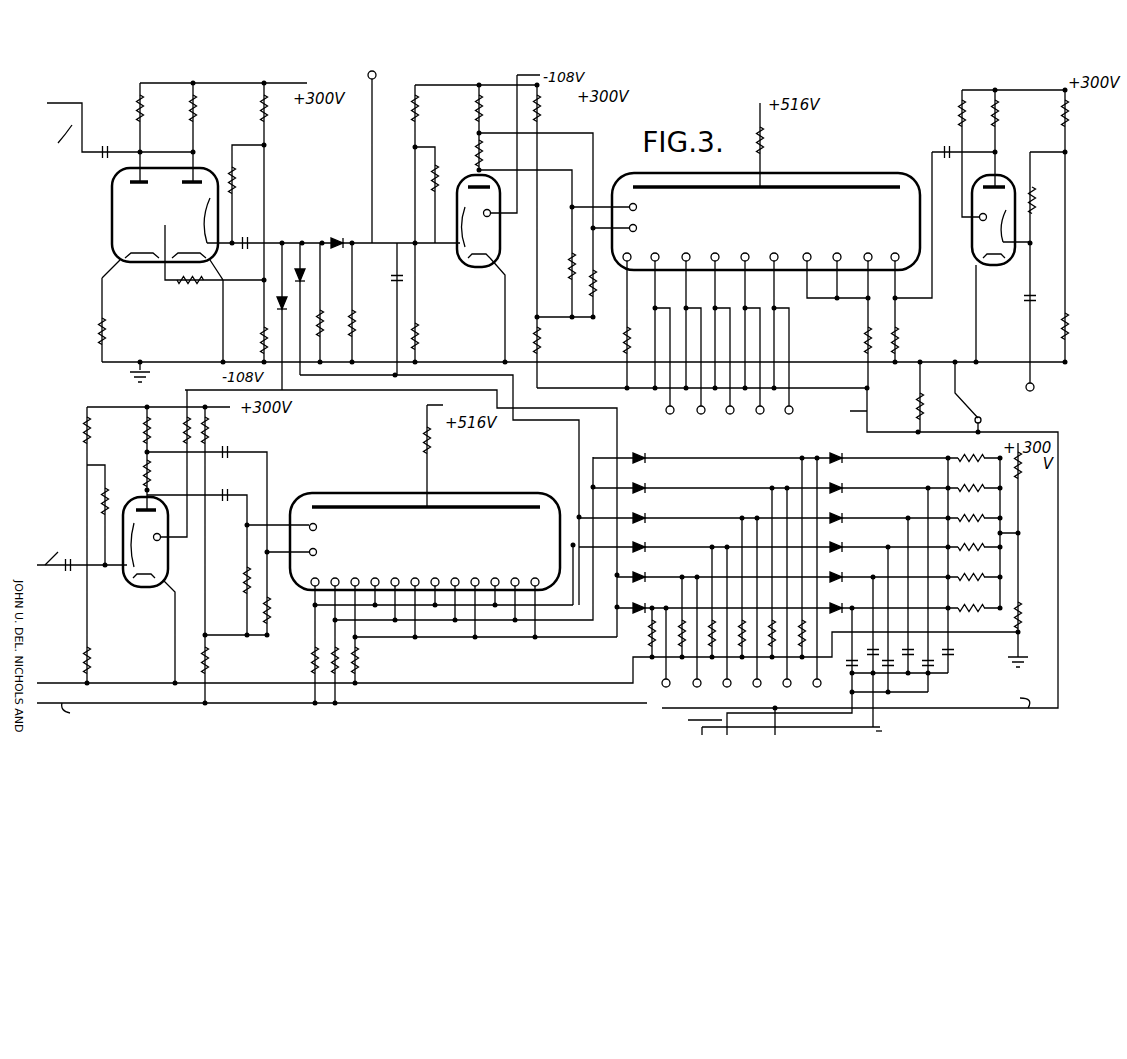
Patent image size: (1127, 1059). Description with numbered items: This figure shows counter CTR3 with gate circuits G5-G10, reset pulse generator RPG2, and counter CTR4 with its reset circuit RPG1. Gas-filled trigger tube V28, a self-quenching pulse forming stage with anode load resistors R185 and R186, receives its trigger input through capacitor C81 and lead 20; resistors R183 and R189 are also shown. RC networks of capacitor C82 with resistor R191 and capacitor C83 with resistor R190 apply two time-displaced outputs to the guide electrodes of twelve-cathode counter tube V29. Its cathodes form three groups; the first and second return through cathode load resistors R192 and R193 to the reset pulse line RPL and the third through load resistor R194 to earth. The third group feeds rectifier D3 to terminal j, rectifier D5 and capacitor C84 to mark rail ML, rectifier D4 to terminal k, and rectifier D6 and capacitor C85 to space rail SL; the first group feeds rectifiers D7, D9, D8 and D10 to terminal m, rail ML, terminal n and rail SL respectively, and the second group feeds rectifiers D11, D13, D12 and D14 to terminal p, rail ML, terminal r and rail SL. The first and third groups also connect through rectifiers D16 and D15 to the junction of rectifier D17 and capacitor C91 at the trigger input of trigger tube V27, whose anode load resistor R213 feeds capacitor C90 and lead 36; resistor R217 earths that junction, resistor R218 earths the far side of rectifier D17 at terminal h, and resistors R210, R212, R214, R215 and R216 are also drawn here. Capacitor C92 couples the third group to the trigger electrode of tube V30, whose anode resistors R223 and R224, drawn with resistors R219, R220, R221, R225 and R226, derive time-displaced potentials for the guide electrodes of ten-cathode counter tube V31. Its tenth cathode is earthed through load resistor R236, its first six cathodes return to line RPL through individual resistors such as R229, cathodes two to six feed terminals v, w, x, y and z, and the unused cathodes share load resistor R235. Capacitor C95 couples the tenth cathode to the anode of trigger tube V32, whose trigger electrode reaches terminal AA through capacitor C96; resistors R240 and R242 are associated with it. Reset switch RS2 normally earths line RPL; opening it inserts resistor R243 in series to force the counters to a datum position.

The lead 36 is at (57, 148).
The capacitor C90 is at (104, 131).
The reset pulse generator RPG2 is at (116, 100).
The load resistor R213 is at (206, 106).
The resistor R214 is at (217, 162).
The resistor R215 is at (279, 116).
The connector panel terminal h is at (380, 84).
The gas-filled trigger tube V27 is at (165, 215).
The capacitor C91 is at (243, 222).
The rectifier D15 is at (273, 252).
The rectifier D16 is at (297, 238).
The rectifier D17 is at (345, 223).
The resistor R212 is at (191, 294).
The resistor R210 is at (122, 327).
The resistor R216 is at (247, 328).
The resistor R217 is at (335, 312).
The resistor R218 is at (369, 327).
The capacitor C92 is at (385, 274).
The resistor R219 is at (433, 108).
The resistor R221 is at (451, 165).
The resistor R220 is at (439, 336).
The series resistor R224 is at (494, 108).
The series resistor R223 is at (494, 151).
The resistor R225 is at (554, 108).
The resistor R226 is at (553, 335).
The cathode load resistor R229 is at (611, 334).
The gas-filled discharge tube V30 is at (476, 235).
The ten-cathode counter tube V31 is at (766, 221).
The counter CTR4 is at (847, 150).
The common load resistor R235 is at (847, 334).
The load resistor R236 is at (913, 334).
The reset circuit RPG1 is at (1007, 100).
The capacitor C95 is at (933, 139).
The resistor R240 is at (1088, 113).
The resistor R242 is at (1087, 326).
The gas-filled trigger tube V32 is at (993, 241).
The capacitor C96 is at (1020, 319).
The resistor R243 is at (902, 399).
The reset switch RS2 is at (982, 401).
The connector panel terminal AA is at (1027, 401).
The reset pulse line RPL is at (546, 562).
The connection panel terminal v is at (671, 423).
The connection panel terminal w is at (701, 423).
The connection panel terminal x is at (730, 423).
The connection panel terminal y is at (760, 424).
The connection panel terminal z is at (789, 423).
The gate circuits G5-G10 is at (712, 450).
The lead 20 is at (55, 549).
The capacitor C81 is at (60, 587).
The resistor R183 is at (110, 660).
The anode load resistor R185 is at (163, 428).
The anode load resistor R186 is at (163, 472).
The capacitor C82 is at (233, 441).
The capacitor C83 is at (232, 484).
The gas-filled trigger tube V28 is at (158, 542).
The resistor R189 is at (227, 660).
The resistor R190 is at (232, 571).
The resistor R191 is at (283, 617).
The cathode load resistor R192 is at (296, 655).
The cathode load resistor R193 is at (328, 673).
The load resistor R194 is at (373, 662).
The counter CTR3 is at (350, 463).
The twelve cathode counter tube V29 is at (425, 541).
The rectifier D12 is at (638, 446).
The rectifier D11 is at (637, 476).
The rectifier D8 is at (632, 507).
The rectifier D7 is at (632, 537).
The rectifier D4 is at (631, 567).
The rectifier D3 is at (631, 597).
The rectifier D14 is at (845, 447).
The rectifier D13 is at (851, 479).
The rectifier D10 is at (851, 508).
The rectifier D9 is at (846, 537).
The rectifier D6 is at (846, 568).
The rectifier D5 is at (846, 598).
The connector panel terminal j is at (661, 687).
The connector panel terminal k is at (691, 685).
The connector panel terminal m is at (718, 685).
The connector panel terminal n is at (750, 685).
The connector panel terminal p is at (780, 688).
The connector panel terminal r is at (812, 685).
The capacitor C84 is at (843, 660).
The capacitor C85 is at (888, 670).
The mark rail ML is at (669, 723).
The space rail SL is at (890, 731).